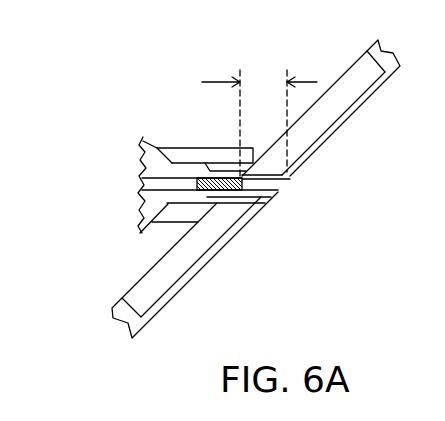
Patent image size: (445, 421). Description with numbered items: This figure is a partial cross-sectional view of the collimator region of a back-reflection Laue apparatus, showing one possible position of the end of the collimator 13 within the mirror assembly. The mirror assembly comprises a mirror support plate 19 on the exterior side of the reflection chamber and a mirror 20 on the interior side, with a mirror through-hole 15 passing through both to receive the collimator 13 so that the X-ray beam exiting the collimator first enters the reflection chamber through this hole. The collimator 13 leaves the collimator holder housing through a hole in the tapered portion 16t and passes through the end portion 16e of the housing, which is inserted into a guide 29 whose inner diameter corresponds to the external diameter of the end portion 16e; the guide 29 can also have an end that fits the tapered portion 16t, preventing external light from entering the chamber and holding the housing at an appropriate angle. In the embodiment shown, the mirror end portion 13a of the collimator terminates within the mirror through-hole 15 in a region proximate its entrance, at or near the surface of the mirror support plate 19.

The collimator 13 is at (155, 190).
The mirror end portion 13a is at (222, 185).
The mirror through-hole 15 is at (214, 82).
The end portion 16e is at (183, 195).
The tapered portion 16t is at (137, 220).
The mirror support plate 19 is at (343, 90).
The mirror 20 is at (322, 148).
The guide 29 is at (206, 156).